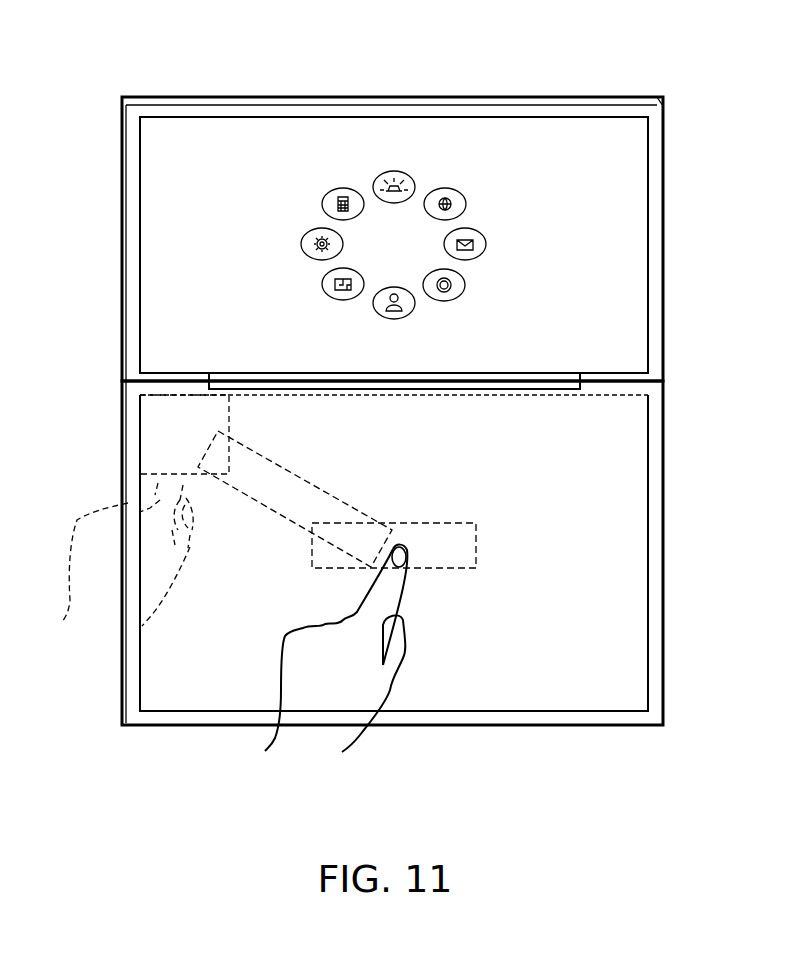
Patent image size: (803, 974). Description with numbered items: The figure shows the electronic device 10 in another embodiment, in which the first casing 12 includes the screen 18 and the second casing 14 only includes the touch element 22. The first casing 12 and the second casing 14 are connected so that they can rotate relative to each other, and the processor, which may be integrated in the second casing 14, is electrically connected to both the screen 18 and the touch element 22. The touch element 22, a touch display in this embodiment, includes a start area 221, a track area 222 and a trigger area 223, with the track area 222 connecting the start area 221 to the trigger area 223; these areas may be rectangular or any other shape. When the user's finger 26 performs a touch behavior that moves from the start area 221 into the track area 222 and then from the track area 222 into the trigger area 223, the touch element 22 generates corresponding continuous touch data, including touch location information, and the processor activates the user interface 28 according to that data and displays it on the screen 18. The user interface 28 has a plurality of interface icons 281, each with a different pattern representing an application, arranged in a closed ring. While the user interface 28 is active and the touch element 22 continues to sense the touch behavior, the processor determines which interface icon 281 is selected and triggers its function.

The electronic device 10 is at (89, 70).
The first casing 12 is at (656, 298).
The second casing 14 is at (656, 474).
The screen 18 is at (625, 348).
The touch element 22 is at (625, 428).
The user's finger 26 is at (378, 692).
The user interface 28 is at (470, 180).
The interface icon 281 is at (393, 171).
The start area 221 is at (204, 419).
The track area 222 is at (240, 462).
The trigger area 223 is at (415, 557).